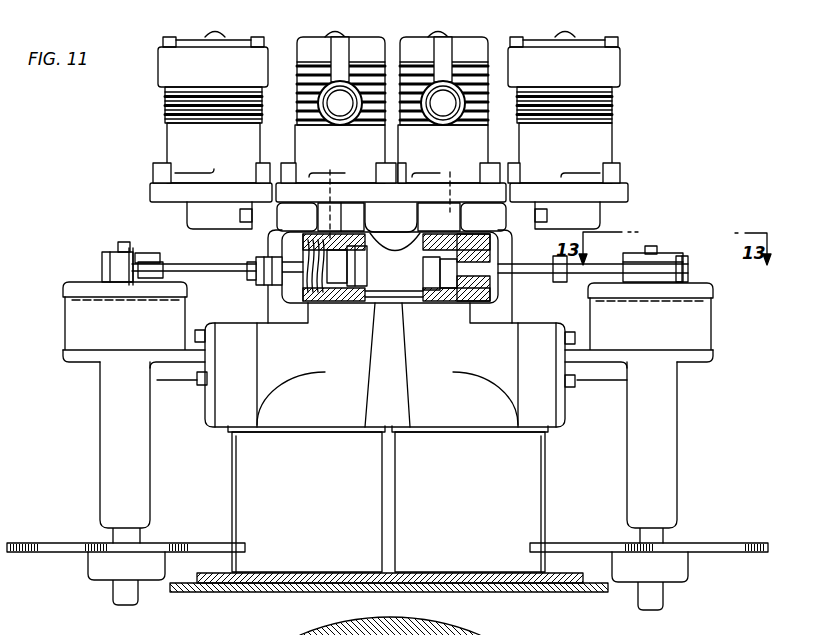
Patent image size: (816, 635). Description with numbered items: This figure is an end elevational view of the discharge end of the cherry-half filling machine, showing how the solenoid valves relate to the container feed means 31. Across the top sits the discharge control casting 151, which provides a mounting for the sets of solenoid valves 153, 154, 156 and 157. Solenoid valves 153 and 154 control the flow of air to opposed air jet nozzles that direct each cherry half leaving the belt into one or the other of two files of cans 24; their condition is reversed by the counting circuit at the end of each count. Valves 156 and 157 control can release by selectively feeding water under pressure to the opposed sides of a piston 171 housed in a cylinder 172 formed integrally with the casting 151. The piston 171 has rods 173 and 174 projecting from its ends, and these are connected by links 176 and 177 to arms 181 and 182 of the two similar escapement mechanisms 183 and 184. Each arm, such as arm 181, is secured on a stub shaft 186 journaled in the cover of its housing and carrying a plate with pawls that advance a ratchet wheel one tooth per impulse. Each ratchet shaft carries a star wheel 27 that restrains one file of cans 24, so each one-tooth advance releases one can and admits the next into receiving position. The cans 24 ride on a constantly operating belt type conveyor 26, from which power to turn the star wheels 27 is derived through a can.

The containers or cans 24 is at (316, 503).
The belt type conveyor 26 is at (568, 580).
The star wheel 27 is at (58, 548).
The container feed means 31 is at (66, 367).
The discharge control casting 151 is at (513, 319).
The solenoid valve 153 is at (240, 41).
The solenoid valve 154 is at (612, 68).
The solenoid valve 156 is at (306, 44).
The solenoid valve 157 is at (462, 42).
The piston 171 is at (450, 303).
The cylinder 172 is at (333, 303).
The rod 173 is at (520, 278).
The rod 174 is at (262, 286).
The link 176 is at (590, 268).
The link 177 is at (188, 266).
The arm 181 is at (688, 264).
The arm 182 is at (108, 259).
The escapement mechanism 183 is at (700, 320).
The escapement mechanism 184 is at (72, 328).
The stub shaft 186 is at (656, 249).